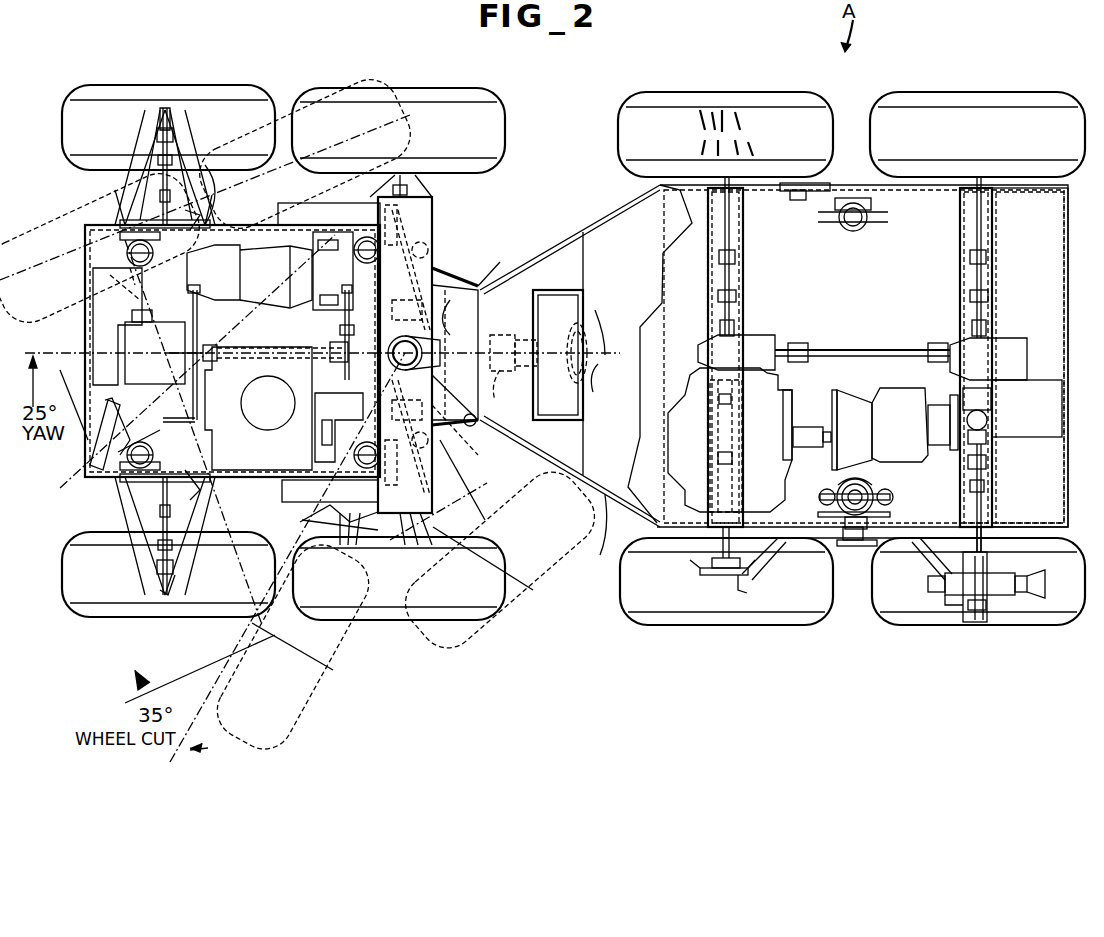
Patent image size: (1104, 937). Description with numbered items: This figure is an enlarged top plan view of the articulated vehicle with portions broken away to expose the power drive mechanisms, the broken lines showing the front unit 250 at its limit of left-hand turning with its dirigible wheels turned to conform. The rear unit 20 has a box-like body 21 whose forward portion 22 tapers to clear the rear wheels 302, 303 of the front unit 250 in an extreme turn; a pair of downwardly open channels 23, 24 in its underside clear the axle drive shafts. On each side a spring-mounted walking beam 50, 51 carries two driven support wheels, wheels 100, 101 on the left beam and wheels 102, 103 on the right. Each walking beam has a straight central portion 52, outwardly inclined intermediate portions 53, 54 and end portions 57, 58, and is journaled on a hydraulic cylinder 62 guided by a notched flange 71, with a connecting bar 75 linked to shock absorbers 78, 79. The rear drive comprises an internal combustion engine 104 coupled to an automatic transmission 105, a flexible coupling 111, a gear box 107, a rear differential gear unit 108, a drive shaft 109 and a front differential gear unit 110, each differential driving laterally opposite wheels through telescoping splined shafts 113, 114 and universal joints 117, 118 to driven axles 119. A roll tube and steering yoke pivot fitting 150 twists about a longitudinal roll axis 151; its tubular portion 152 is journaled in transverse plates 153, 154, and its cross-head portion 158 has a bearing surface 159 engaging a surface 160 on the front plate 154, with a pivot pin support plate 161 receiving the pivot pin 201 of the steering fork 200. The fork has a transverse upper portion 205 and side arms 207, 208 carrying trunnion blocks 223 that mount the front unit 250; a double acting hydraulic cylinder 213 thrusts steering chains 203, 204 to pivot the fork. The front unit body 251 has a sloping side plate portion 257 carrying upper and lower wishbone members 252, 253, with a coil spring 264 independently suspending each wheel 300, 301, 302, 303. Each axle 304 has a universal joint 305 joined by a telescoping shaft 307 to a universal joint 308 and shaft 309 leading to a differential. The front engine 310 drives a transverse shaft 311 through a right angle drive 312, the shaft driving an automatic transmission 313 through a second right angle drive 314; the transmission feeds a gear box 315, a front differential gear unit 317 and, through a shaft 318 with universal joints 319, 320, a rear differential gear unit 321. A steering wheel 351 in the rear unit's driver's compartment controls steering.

The rear unit 20 is at (856, 116).
The box-like body 21 is at (1064, 538).
The forward portion 22 is at (604, 527).
The downwardly open channel 23 is at (990, 490).
The downwardly open channel 24 is at (739, 260).
The walking beam 50 is at (820, 540).
The walking beam 51 is at (834, 174).
The straight central portion 52 is at (853, 543).
The outwardly inclined intermediate portion 53 is at (938, 558).
The outwardly inclined intermediate portion 54 is at (760, 548).
The end portion 57 is at (970, 553).
The end portion 58 is at (722, 572).
The hydraulic cylinder 62 is at (855, 490).
The notched flange 71 is at (863, 490).
The shock absorber connecting bar 75 is at (889, 497).
The shock absorber 78 is at (822, 497).
The shock absorber 79 is at (880, 497).
The support wheel 100 is at (687, 617).
The support wheel 101 is at (922, 622).
The support wheel 102 is at (707, 91).
The support wheel 103 is at (1023, 91).
The internal combustion engine 104 is at (782, 466).
The automatic transmission 105 is at (920, 435).
The gear box 107 is at (1046, 413).
The rear differential gear unit 108 is at (1002, 363).
The drive shaft 109 is at (852, 346).
The front differential gear unit 110 is at (746, 360).
The flexible coupling 111 is at (978, 425).
The telescoping splined shaft 113 is at (973, 470).
The telescoping splined shaft 114 is at (975, 280).
The universal joint 117 is at (1008, 564).
The universal joint 118 is at (963, 394).
The driven axle 119 is at (1018, 582).
The roll tube and steering yoke pivot fitting 150 is at (443, 293).
The longitudinal roll axis 151 is at (616, 330).
The tubular portion 152 is at (513, 369).
The transverse plate 153 is at (535, 313).
The front plate 154 is at (505, 261).
The cross-head portion 158 is at (510, 272).
The bearing surface 159 is at (468, 327).
The bearing surface 160 is at (472, 426).
The pivot pin support plate 161 is at (458, 380).
The steering fork 200 is at (445, 485).
The pivot pin 201 is at (422, 340).
The steering chain 203 is at (458, 462).
The steering chain 204 is at (446, 266).
The upper portion 205 is at (370, 528).
The side arm 207 is at (332, 519).
The side arm 208 is at (357, 210).
The double acting hydraulic cylinder 213 is at (455, 414).
The trunnion block 223 is at (278, 206).
The front unit 250 is at (284, 140).
The front unit body 251 is at (78, 222).
The upper wishbone suspension member 252 is at (145, 182).
The lower wishbone suspension member 253 is at (164, 152).
The lower portion of side plate 257 is at (234, 476).
The coil spring 264 is at (125, 427).
The dirigible support wheel 300 is at (114, 608).
The dirigible support wheel 301 is at (92, 88).
The dirigible support wheel 302 is at (379, 610).
The dirigible support wheel 303 is at (460, 90).
The axle 304 is at (162, 128).
The universal joint 305 is at (180, 164).
The telescoping shaft 307 is at (238, 200).
The universal joint 308 is at (167, 240).
The shaft 309 is at (192, 308).
The internal combustion engine 310 is at (284, 457).
The transversely extending shaft 311 is at (346, 332).
The right angle gear drive mechanism 312 is at (356, 413).
The automatic transmission 313 is at (272, 286).
The second right angle drive mechanism 314 is at (331, 271).
The gear box 315 is at (138, 315).
The front differential gear unit 317 is at (180, 373).
The shaft 318 is at (310, 346).
The universal joint 319 is at (214, 354).
The universal joint 320 is at (328, 362).
The rear differential gear unit 321 is at (407, 350).
The steering wheel 351 is at (596, 349).